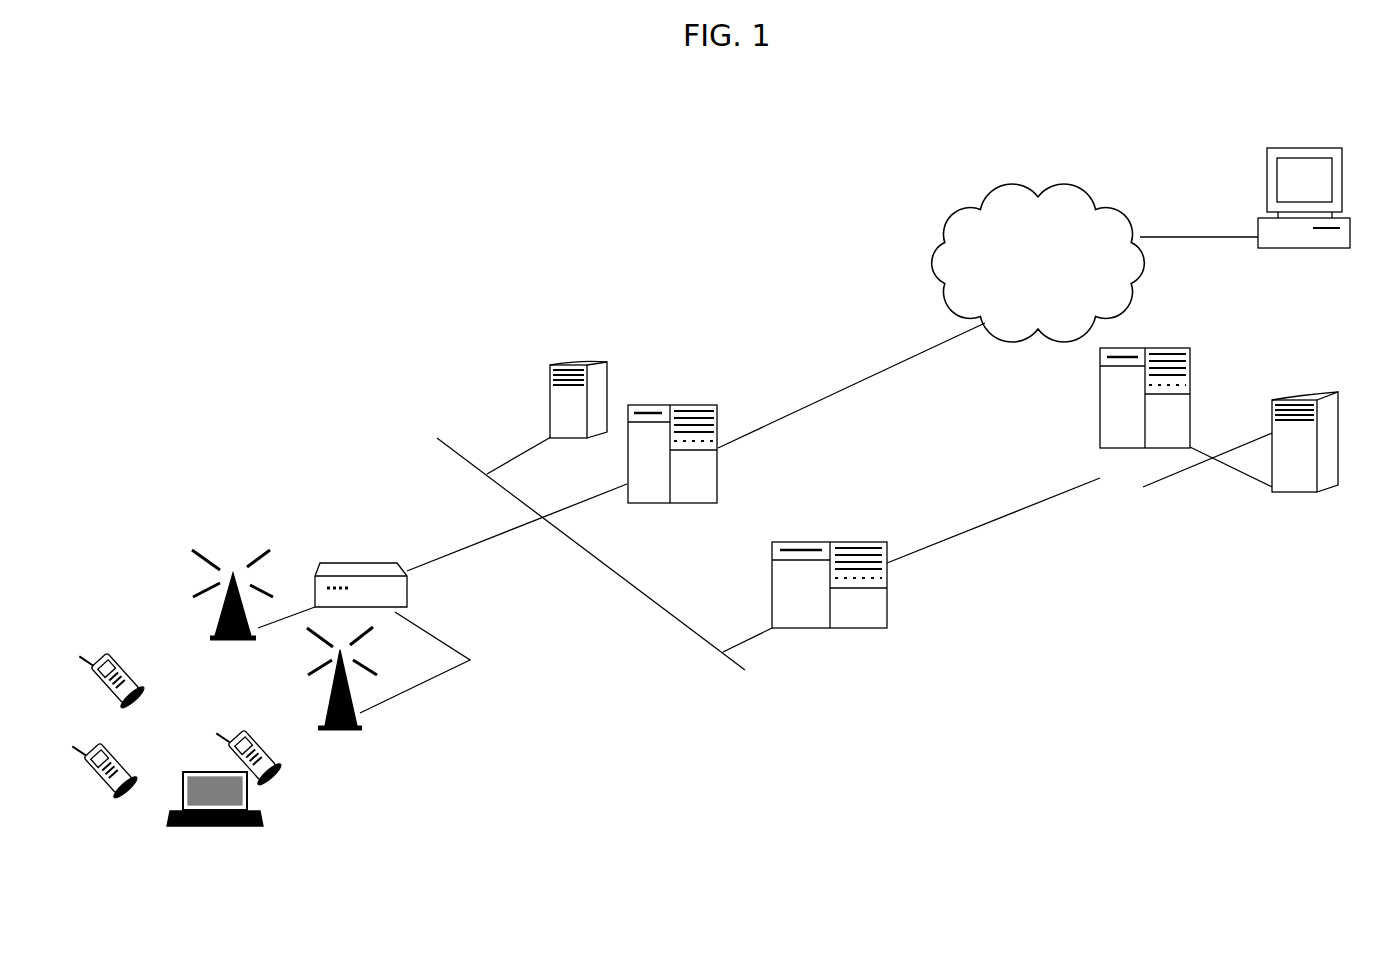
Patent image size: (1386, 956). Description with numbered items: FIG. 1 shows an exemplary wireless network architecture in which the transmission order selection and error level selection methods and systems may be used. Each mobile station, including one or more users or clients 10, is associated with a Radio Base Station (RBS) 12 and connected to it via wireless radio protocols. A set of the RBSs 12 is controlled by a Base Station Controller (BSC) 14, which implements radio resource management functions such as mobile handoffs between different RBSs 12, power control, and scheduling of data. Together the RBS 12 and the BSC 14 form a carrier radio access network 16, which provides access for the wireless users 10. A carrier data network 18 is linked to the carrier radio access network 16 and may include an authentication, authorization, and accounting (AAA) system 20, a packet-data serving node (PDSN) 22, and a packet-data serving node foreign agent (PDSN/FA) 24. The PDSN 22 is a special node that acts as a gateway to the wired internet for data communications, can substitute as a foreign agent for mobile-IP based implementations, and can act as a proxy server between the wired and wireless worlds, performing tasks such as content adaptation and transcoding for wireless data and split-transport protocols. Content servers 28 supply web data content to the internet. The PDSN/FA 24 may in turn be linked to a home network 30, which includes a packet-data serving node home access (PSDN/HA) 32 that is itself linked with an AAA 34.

The users or clients 10 is at (225, 830).
The Radio Base Station (RBS) 12 is at (357, 757).
The Base Station Controller (BSC) 14 is at (373, 560).
The carrier radio access network 16 is at (1030, 148).
The carrier data network 18 is at (962, 693).
The authentication, authorization, and accounting (AAA) system 20 is at (553, 363).
The packet-data serving node (PDSN) 22 is at (717, 508).
The packet-data serving node foreign agent (PDSN/FA) 24 is at (887, 605).
The content servers 28 is at (1288, 147).
The home network 30 is at (1352, 573).
The packet-data serving node home access (PSDN/HA) 32 is at (1170, 347).
The AAA 34 is at (1300, 439).